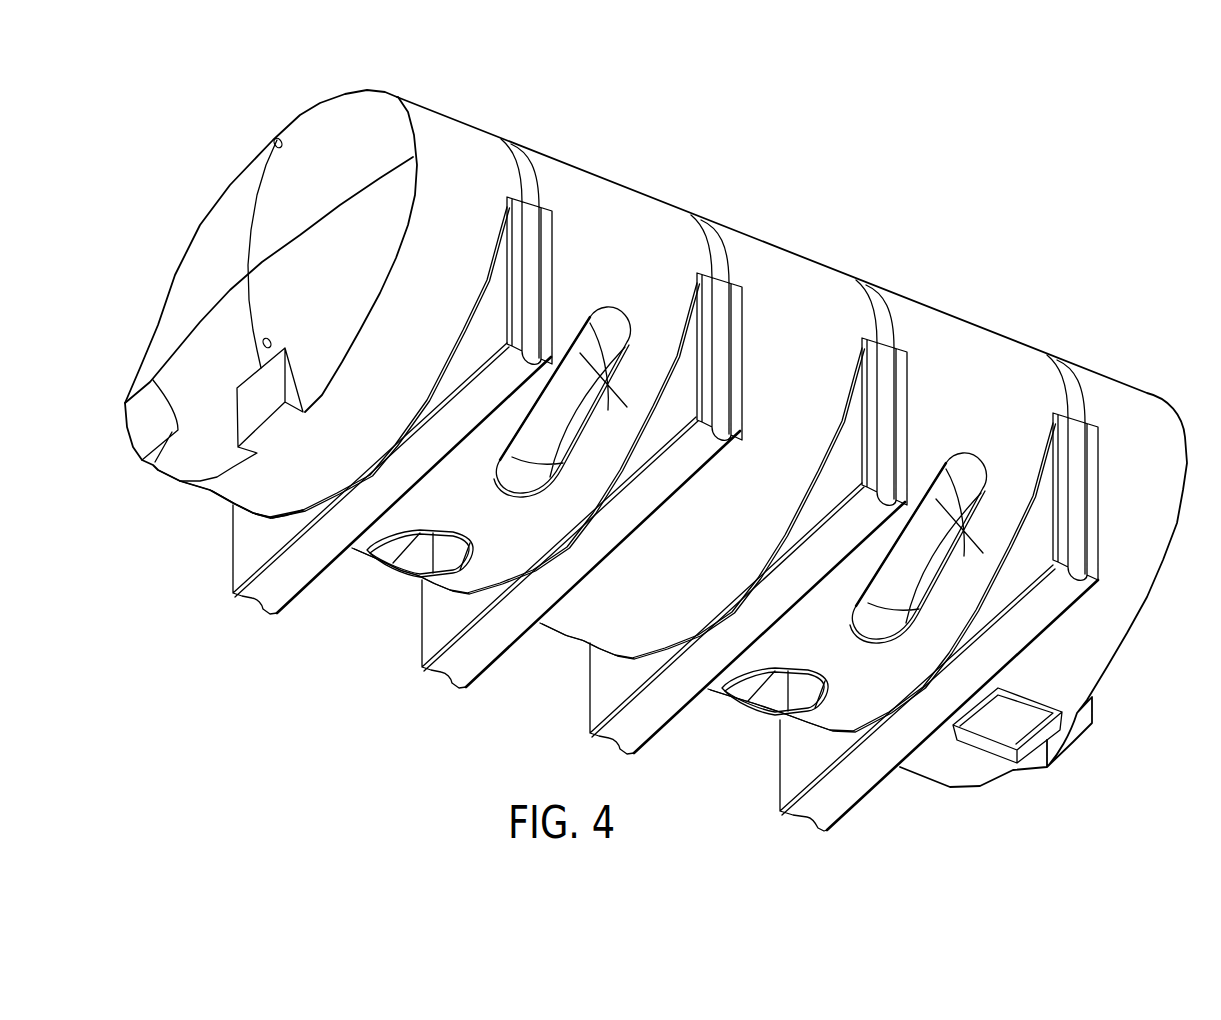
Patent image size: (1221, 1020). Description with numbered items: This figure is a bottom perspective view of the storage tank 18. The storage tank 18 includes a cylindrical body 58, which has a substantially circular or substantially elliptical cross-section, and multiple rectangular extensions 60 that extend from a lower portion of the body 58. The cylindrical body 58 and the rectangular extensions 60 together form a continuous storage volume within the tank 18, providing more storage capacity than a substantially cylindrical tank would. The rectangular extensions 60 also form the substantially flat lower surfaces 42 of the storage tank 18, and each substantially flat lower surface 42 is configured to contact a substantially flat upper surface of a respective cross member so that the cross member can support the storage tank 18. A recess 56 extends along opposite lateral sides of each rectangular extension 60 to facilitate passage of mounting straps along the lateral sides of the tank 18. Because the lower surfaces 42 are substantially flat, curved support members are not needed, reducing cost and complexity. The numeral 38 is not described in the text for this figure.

The storage tank 18 is at (784, 206).
The tank 38 is at (248, 131).
The substantially flat lower surface 42 is at (473, 640).
The recess 56 is at (713, 247).
The cylindrical body 58 is at (452, 137).
The rectangular extension 60 is at (497, 318).